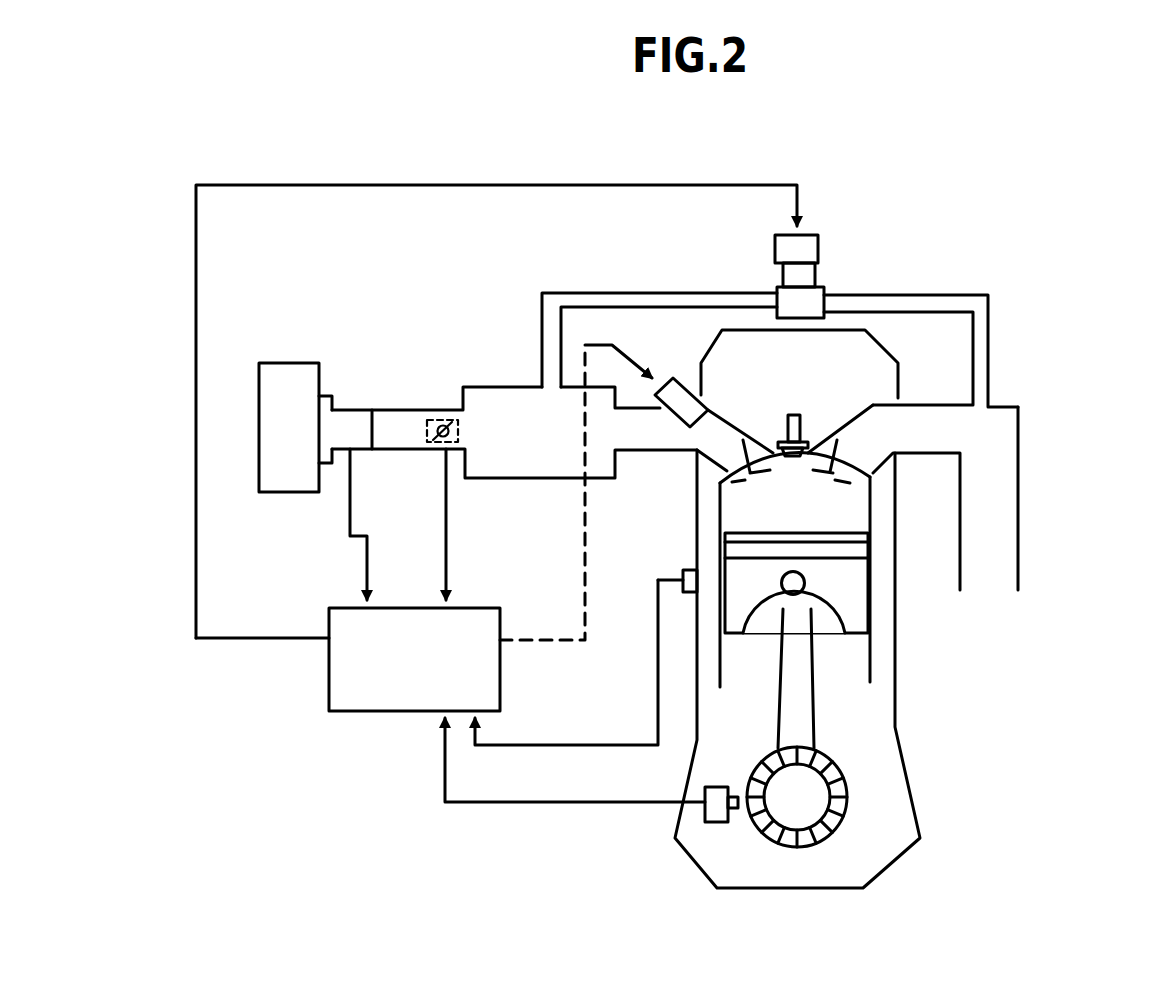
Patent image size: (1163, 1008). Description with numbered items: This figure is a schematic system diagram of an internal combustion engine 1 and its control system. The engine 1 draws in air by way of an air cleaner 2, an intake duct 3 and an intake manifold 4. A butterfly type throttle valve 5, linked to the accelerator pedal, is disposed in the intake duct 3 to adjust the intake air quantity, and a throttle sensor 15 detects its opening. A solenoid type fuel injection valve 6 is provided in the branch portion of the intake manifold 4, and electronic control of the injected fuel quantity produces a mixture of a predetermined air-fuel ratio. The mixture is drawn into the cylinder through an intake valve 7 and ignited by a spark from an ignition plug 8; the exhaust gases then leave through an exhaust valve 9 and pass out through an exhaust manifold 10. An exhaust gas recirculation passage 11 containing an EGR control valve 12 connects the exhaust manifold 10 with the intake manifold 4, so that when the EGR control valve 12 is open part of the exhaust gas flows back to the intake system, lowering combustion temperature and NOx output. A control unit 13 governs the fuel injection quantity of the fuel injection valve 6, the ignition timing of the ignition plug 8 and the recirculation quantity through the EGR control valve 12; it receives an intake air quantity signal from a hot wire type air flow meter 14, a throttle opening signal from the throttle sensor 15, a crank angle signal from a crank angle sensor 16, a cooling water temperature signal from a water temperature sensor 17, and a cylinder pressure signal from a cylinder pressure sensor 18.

The internal combustion engine 1 is at (934, 667).
The air cleaner 2 is at (304, 365).
The intake duct 3 is at (404, 410).
The intake manifold 4 is at (660, 452).
The throttle valve 5 is at (452, 420).
The fuel injection valve 6 is at (682, 380).
The intake valve 7 is at (737, 480).
The ignition plug 8 is at (803, 433).
The exhaust valve 9 is at (847, 485).
The exhaust manifold 10 is at (1018, 453).
The exhaust gas recirculation passage 11 is at (990, 333).
The EGR control valve 12 is at (818, 248).
The control unit 13 is at (500, 677).
The air flow meter 14 is at (353, 410).
The throttle sensor 15 is at (467, 430).
The crank angle sensor 16 is at (723, 822).
The water temperature sensor 17 is at (658, 578).
The cylinder pressure sensor 18 is at (780, 445).